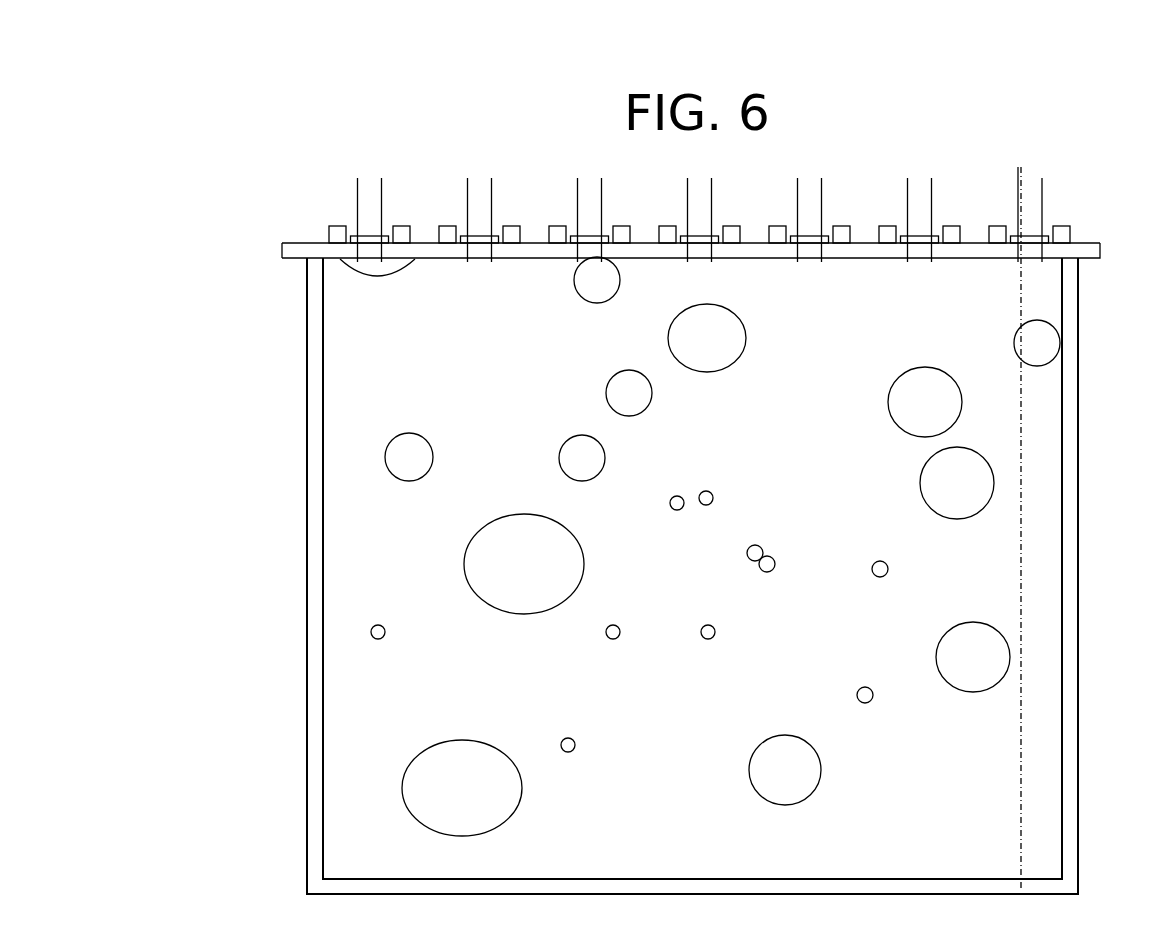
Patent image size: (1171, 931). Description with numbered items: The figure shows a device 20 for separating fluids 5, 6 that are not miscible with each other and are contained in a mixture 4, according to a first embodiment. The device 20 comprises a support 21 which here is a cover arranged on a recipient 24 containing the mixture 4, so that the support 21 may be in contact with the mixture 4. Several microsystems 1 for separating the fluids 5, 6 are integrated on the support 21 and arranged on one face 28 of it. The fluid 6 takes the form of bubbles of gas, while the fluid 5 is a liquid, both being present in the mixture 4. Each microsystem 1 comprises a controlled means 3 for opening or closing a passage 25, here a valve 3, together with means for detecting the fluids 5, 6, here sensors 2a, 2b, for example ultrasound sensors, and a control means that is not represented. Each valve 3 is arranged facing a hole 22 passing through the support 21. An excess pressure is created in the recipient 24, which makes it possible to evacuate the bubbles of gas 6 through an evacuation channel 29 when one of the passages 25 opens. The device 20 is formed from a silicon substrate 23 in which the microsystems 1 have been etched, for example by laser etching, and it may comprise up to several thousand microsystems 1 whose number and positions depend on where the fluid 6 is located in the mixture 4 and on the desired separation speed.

The device for separating fluids 20 is at (222, 84).
The microsystem 1 is at (406, 106).
The sensor 2a is at (337, 226).
The sensor 2b is at (401, 226).
The valve 3 is at (383, 230).
The passage 25 is at (355, 220).
The evacuation channel 29 is at (367, 236).
The support 21 is at (1088, 251).
The silicon substrate 23 is at (297, 243).
The face of the support 28 is at (1088, 243).
The recipient 24 is at (1066, 363).
The liquid 5 is at (1035, 815).
The mixture 4 is at (1036, 721).
The bubbles of gas 6 is at (485, 583).
The hole 22 is at (368, 259).